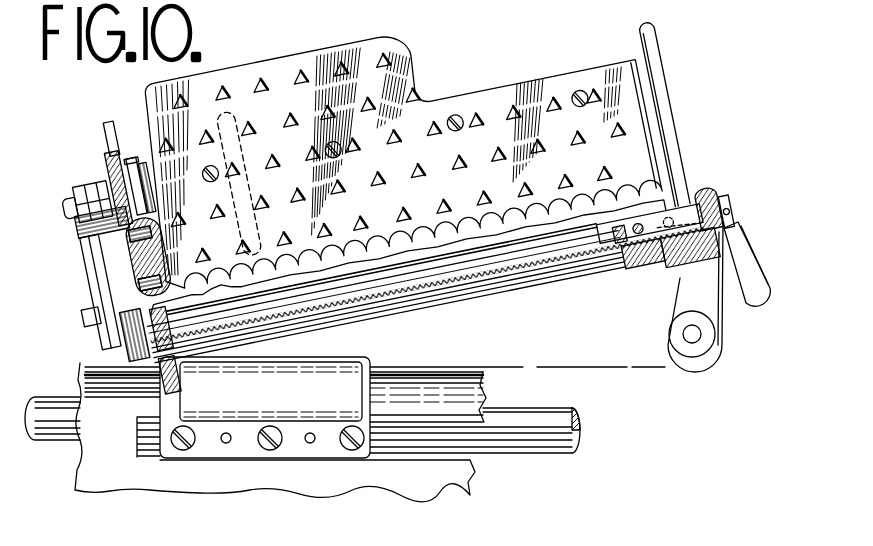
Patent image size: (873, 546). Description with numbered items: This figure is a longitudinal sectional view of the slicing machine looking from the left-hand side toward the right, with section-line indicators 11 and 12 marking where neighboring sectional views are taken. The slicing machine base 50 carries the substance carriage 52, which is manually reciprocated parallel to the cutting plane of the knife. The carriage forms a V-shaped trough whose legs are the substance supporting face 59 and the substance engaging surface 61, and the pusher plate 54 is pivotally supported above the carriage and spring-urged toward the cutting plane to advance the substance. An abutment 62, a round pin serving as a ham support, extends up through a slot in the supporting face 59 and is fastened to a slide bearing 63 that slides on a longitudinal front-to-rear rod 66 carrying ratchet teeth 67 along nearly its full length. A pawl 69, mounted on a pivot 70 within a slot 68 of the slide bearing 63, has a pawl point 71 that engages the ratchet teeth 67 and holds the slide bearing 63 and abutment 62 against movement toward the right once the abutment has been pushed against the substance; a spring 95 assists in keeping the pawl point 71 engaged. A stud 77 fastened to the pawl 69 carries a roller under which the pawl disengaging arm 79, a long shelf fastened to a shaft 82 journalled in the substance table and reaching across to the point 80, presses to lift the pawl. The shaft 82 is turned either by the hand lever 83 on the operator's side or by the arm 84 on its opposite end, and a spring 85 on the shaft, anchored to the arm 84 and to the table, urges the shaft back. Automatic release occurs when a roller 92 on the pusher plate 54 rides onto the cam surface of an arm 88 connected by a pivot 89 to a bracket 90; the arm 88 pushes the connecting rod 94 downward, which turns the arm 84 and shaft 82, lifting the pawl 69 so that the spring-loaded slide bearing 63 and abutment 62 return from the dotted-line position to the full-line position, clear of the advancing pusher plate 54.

The section line 11- 11 is at (78, 106).
The section line 12- 12 is at (448, 186).
The slicing machine base 50 is at (408, 483).
The substance carriage 52 is at (665, 363).
The pusher plate 54 is at (404, 73).
The substance supporting face 59 is at (457, 246).
The substance engaging surface 61 is at (160, 254).
The abutment 62 is at (226, 112).
The slide bearing 63 is at (683, 268).
The rod 66 is at (546, 276).
The ratchet teeth 67 is at (581, 272).
The slot 68 is at (611, 240).
The pawl 69 is at (717, 186).
The pivot 70 is at (637, 224).
The pawl point 71 is at (703, 236).
The stud 77 is at (654, 274).
The pawl disengaging arm 79 is at (498, 270).
The point 80 is at (210, 360).
The shaft 82 is at (296, 300).
The hand lever 83 is at (758, 283).
The arm 84 is at (114, 302).
The spring 85 is at (138, 366).
The arm 88 is at (71, 198).
The pivot 89 is at (94, 316).
The bracket 90 is at (111, 122).
The roller 92 is at (86, 226).
The connecting rod 94 is at (88, 259).
The spring 95 is at (661, 221).